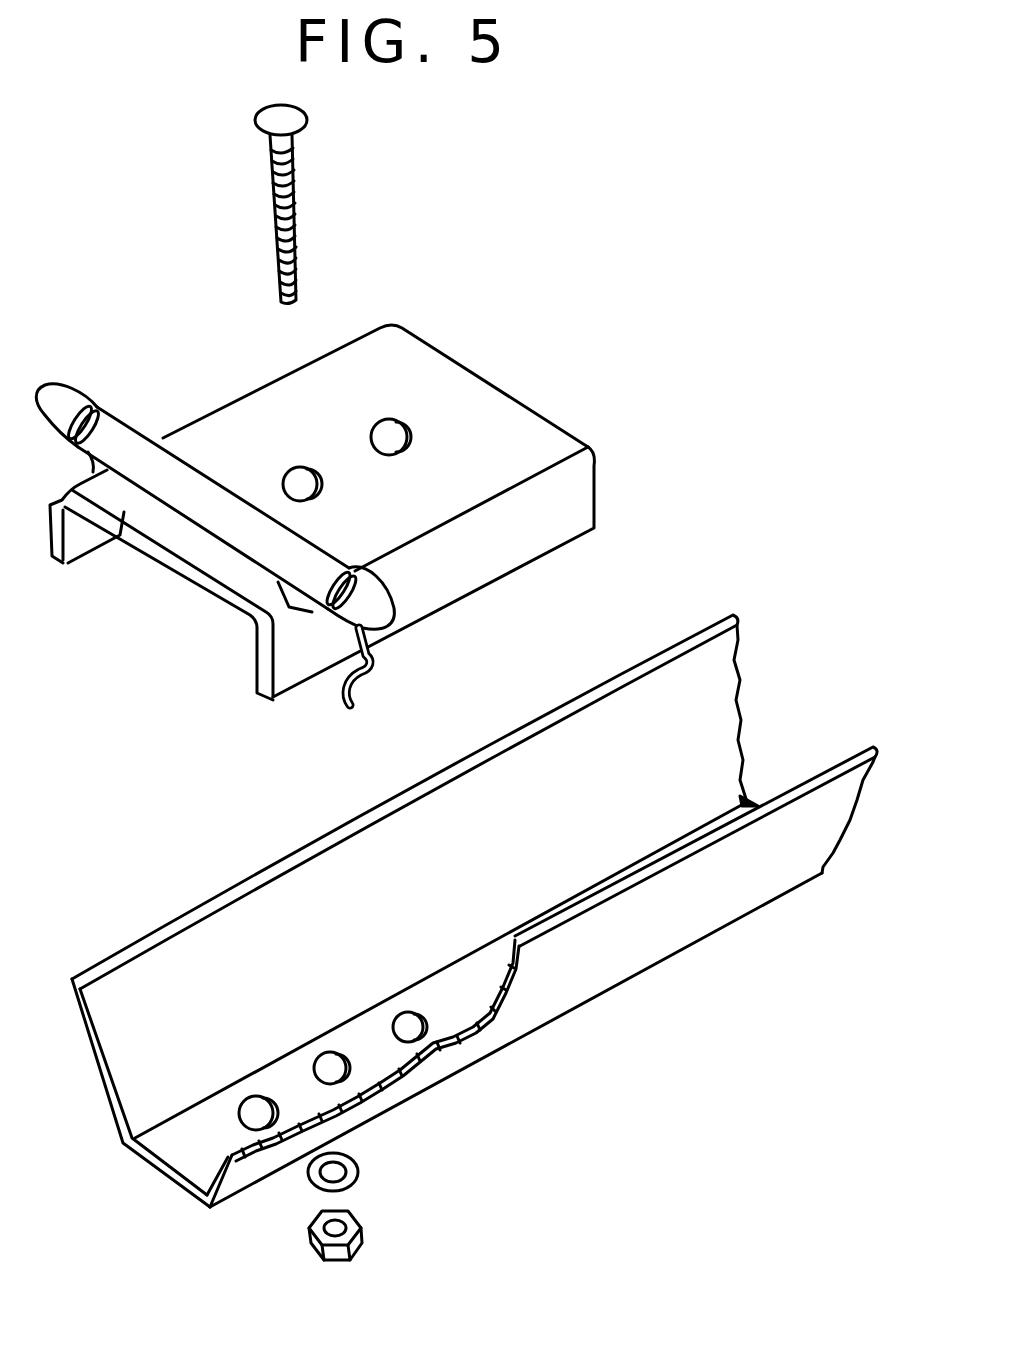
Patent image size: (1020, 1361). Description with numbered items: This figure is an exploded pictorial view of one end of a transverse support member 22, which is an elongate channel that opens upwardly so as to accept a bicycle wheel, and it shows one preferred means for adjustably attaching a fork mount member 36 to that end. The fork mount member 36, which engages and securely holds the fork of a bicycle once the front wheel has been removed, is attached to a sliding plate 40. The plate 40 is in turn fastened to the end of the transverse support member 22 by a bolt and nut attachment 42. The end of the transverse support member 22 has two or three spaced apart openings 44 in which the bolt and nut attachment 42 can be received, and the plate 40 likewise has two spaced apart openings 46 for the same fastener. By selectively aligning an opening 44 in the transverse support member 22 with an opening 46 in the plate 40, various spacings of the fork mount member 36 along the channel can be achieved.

The transverse support member 22 is at (577, 760).
The fork mount member 36 is at (222, 510).
The sliding plate 40 is at (490, 430).
The bolt and nut attachment 42 is at (410, 1252).
The spaced apart openings 44 is at (392, 1023).
The spaced apart openings 46 is at (307, 465).